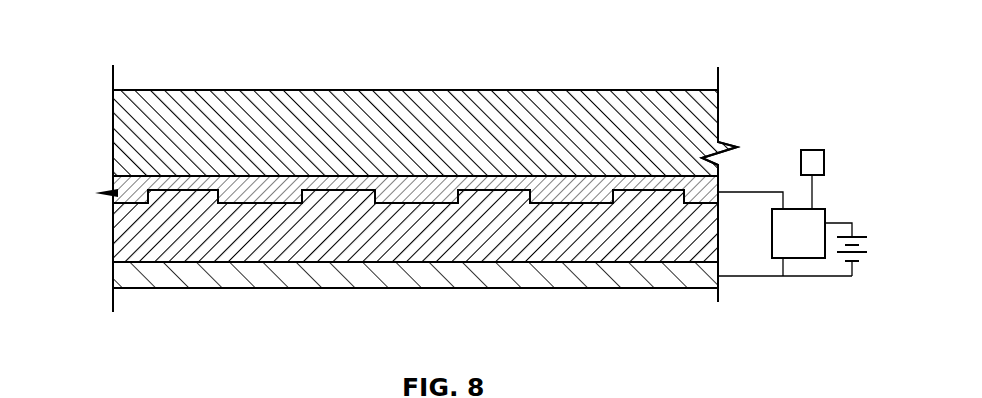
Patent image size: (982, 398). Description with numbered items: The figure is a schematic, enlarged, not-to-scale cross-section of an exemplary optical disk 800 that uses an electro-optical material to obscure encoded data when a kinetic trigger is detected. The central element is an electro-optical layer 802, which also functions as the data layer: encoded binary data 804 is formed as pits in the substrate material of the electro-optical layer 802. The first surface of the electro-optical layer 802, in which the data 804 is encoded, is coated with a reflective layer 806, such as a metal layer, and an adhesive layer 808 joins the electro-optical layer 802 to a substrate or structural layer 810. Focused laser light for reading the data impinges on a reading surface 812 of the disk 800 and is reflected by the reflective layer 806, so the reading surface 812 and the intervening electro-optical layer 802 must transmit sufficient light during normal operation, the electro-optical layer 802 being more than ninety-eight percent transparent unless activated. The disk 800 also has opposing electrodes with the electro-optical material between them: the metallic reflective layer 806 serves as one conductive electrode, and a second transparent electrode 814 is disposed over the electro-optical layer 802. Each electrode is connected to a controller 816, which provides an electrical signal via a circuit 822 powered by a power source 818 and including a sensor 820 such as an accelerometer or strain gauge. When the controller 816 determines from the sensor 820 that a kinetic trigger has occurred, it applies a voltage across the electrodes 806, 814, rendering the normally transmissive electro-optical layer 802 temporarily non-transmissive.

The optical disk 800 is at (116, 40).
The electro-optical layer 802 is at (116, 258).
The encoded binary data 804 is at (126, 230).
The reflective layer 806 is at (113, 201).
The adhesive layer 808 is at (125, 187).
The structural layer 810 is at (345, 102).
The reading surface 812 is at (596, 289).
The second transparent electrode 814 is at (175, 282).
The controller 816 is at (783, 248).
The power source 818 is at (857, 284).
The sensor 820 is at (813, 157).
The circuit 822 is at (809, 315).